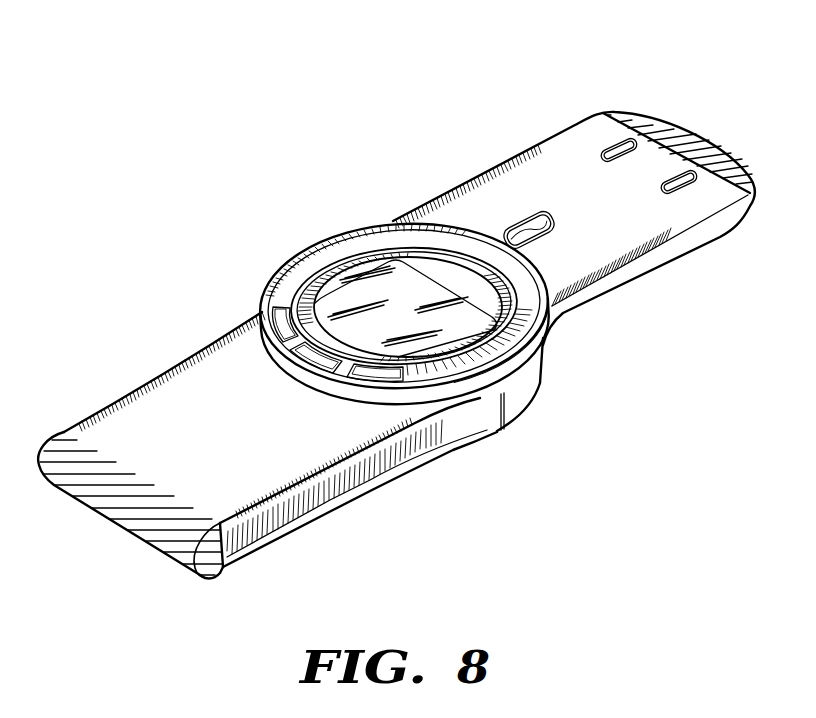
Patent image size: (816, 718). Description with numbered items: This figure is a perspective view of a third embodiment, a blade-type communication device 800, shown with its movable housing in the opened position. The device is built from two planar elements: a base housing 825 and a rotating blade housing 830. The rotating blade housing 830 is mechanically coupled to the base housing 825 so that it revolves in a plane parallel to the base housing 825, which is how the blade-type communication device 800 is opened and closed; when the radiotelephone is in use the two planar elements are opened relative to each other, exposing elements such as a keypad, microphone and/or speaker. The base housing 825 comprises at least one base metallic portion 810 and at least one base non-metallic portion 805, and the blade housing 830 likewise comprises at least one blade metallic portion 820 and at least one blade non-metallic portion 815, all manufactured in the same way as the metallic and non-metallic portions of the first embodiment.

The blade-type communication device 800 is at (393, 349).
The base non-metallic portion 805 is at (208, 560).
The base metallic portion 810 is at (353, 483).
The blade non-metallic portion 815 is at (707, 145).
The blade metallic portion 820 is at (637, 270).
The base housing 825 is at (165, 423).
The rotating blade housing 830 is at (535, 195).